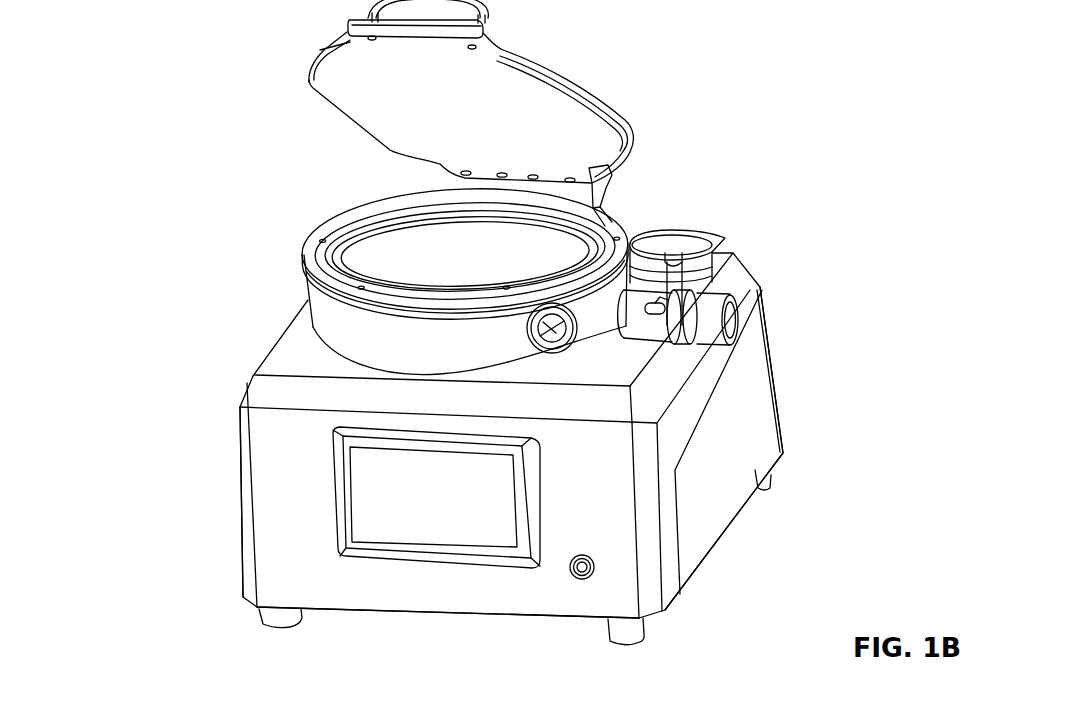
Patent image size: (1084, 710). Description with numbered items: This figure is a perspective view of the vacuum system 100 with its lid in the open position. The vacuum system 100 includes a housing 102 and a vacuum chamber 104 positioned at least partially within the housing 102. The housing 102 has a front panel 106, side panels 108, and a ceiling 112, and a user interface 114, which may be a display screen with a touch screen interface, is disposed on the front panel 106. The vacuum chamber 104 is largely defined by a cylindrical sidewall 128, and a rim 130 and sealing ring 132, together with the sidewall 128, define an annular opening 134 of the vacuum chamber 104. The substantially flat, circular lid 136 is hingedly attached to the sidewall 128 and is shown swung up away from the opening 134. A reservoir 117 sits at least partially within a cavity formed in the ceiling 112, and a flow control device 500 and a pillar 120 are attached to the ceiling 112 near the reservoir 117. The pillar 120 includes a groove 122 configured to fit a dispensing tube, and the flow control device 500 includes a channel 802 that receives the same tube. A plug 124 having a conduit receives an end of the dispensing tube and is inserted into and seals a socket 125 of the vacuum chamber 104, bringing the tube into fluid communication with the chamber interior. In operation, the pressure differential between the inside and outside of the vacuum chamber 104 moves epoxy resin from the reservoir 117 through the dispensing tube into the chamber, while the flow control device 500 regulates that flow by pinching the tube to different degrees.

The vacuum system 100 is at (150, 40).
The housing 102 is at (768, 250).
The vacuum chamber 104 is at (590, 42).
The front panel 106 is at (270, 458).
The side panels 108 is at (748, 413).
The ceiling 112 is at (293, 353).
The user interface 114 is at (438, 500).
The reservoir 117 is at (697, 215).
The pillar 120 is at (747, 234).
The groove 122 is at (668, 246).
The plug 124 is at (560, 354).
The socket 125 is at (584, 354).
The cylindrical sidewall 128 is at (336, 306).
The rim 130 is at (305, 280).
The sealing ring 132 is at (347, 223).
The annular opening 134 is at (425, 245).
The lid 136 is at (305, 87).
The flow control device 500 is at (740, 310).
The channel 802 is at (668, 328).